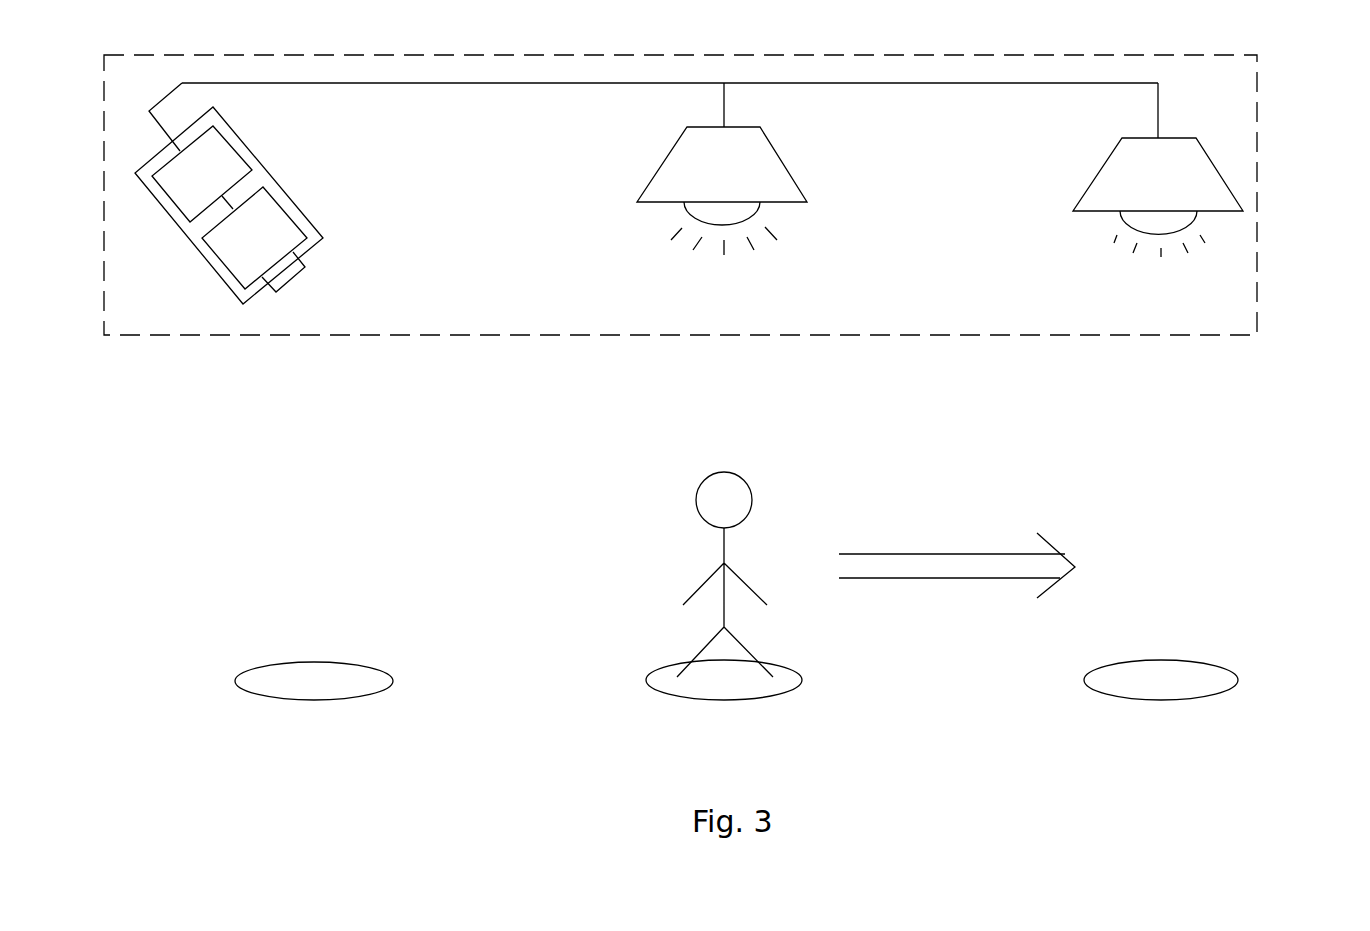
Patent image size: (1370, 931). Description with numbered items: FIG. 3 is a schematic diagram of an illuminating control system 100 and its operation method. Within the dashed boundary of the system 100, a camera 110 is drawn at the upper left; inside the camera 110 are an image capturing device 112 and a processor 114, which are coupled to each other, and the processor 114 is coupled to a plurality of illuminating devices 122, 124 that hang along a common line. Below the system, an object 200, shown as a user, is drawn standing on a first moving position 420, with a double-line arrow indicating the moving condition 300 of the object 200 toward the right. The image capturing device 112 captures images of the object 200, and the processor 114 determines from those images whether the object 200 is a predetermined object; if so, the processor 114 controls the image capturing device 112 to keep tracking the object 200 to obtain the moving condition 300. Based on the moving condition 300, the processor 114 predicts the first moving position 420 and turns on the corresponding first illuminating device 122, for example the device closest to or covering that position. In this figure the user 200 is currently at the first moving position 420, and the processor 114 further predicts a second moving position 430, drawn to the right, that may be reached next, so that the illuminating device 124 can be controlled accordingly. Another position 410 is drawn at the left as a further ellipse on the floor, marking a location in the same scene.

The illuminating control system 100 is at (1257, 170).
The camera 110 is at (188, 240).
The image capturing device 112 is at (287, 207).
The processor 114 is at (233, 139).
The first illuminating device 122 is at (666, 163).
The illuminating device 124 is at (1102, 169).
The object 200 is at (762, 472).
The moving condition 300 is at (946, 538).
The first location 410 is at (406, 688).
The first moving position 420 is at (817, 688).
The second moving position 430 is at (1248, 695).